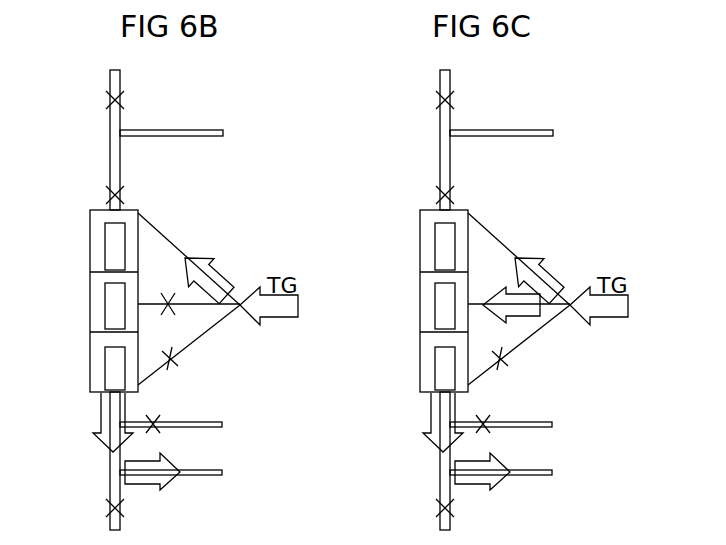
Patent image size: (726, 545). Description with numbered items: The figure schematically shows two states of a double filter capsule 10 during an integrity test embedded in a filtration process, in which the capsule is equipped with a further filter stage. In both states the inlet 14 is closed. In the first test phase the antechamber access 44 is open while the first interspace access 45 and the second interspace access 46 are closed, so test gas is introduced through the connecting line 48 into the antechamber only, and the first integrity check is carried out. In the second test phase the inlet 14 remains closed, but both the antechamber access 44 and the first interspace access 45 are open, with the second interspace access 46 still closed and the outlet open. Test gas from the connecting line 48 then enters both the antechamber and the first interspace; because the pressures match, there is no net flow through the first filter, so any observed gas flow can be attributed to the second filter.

In FIG. 6B, the fluid handling device 10 is at (74, 262).
In FIG. 6C, the fluid handling device 10 is at (409, 301).
In FIG. 6B, the inlet 14 is at (108, 205).
In FIG. 6C, the inlet 14 is at (466, 140).
In FIG. 6B, the antechamber access 44 is at (139, 214).
In FIG. 6C, the antechamber access 44 is at (519, 242).
In FIG. 6B, the first interspace access 45 is at (139, 304).
In FIG. 6C, the first interspace access 45 is at (519, 292).
In FIG. 6B, the second interspace access 46 is at (139, 386).
In FIG. 6C, the second interspace access 46 is at (519, 355).
In FIG. 6B, the connecting line 48 is at (170, 240).
In FIG. 6C, the connecting line 48 is at (532, 259).